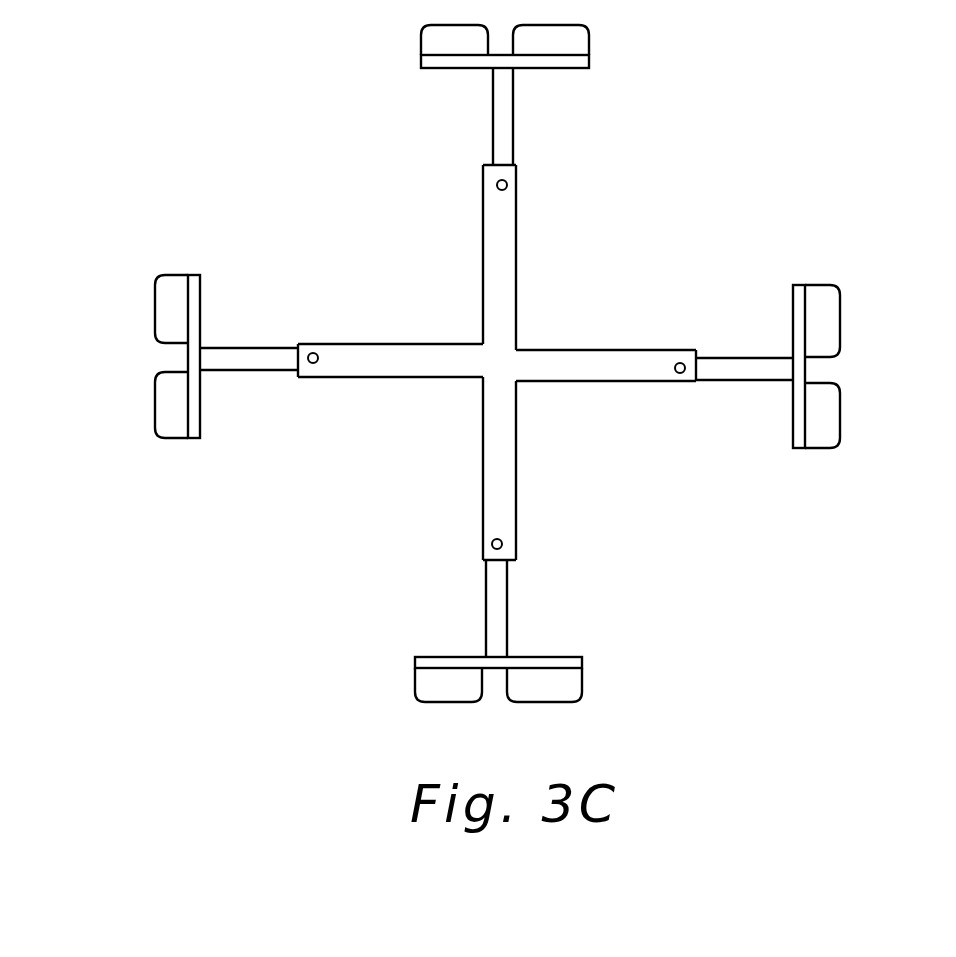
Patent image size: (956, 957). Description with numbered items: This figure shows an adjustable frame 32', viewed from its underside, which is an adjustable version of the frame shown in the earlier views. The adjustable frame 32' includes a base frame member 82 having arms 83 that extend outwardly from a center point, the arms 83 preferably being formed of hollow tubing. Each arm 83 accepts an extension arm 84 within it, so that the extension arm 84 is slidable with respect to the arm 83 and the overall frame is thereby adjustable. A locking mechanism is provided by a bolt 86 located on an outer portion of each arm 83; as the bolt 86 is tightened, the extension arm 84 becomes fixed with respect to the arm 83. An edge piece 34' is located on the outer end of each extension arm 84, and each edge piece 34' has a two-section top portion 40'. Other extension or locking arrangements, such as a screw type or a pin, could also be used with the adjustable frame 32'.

The adjustable frame 32' is at (497, 362).
The base frame member 82 is at (625, 358).
The arms 83 is at (492, 228).
The extension arm 84 is at (502, 125).
The bolt 86 is at (508, 184).
The edge piece 34' is at (514, 363).
The two-section top portion 40' is at (123, 356).